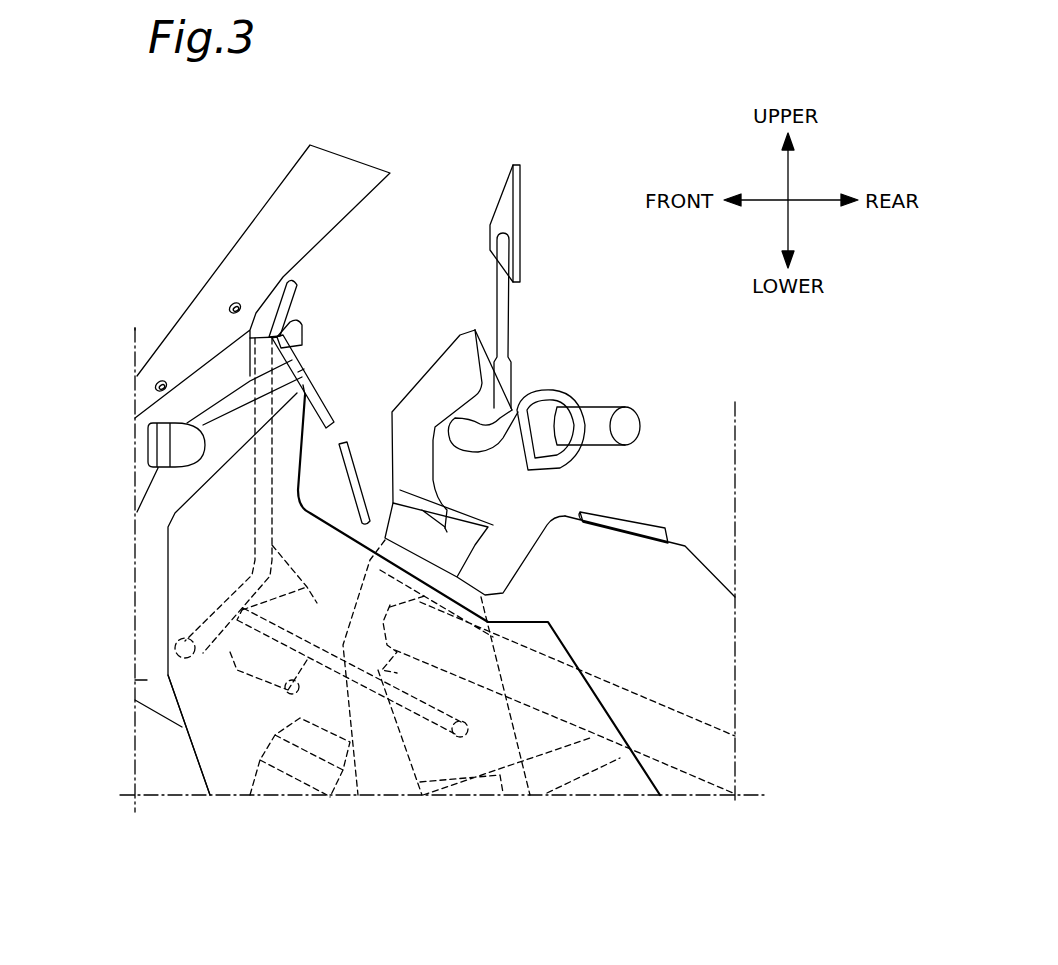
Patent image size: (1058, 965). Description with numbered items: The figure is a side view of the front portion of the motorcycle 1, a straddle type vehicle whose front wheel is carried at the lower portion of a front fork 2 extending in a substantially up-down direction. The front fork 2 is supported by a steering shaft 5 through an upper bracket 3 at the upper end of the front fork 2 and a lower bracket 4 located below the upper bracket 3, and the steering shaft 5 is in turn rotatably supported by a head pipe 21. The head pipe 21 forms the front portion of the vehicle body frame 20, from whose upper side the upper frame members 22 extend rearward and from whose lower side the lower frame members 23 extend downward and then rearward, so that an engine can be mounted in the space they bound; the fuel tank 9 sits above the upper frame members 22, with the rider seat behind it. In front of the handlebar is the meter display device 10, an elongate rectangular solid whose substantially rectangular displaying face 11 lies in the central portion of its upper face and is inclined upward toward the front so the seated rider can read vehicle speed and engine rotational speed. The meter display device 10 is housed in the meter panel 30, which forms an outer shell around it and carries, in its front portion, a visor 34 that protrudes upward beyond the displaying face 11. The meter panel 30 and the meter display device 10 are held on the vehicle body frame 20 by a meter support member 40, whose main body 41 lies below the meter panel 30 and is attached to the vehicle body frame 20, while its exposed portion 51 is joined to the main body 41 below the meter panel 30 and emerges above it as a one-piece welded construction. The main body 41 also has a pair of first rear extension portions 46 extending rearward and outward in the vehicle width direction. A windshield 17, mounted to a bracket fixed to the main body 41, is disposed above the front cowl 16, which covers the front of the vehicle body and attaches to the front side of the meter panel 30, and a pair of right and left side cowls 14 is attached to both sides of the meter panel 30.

The motorcycle 1 is at (112, 262).
The front fork 2 is at (252, 780).
The upper bracket 3 is at (457, 563).
The lower bracket 4 is at (303, 718).
The steering shaft 5 is at (443, 513).
The fuel tank 9 is at (710, 570).
The meter display device 10 is at (304, 378).
The displaying face 11 is at (306, 393).
The side cowls 14 is at (220, 783).
The front cowl 16 is at (135, 680).
The windshield 17 is at (249, 228).
The vehicle body frame 20 is at (668, 700).
The head pipe 21 is at (333, 715).
The upper frame members 22 is at (697, 732).
The lower frame members 23 is at (400, 783).
The meter panel 30 is at (315, 473).
The visor 34 is at (301, 323).
The meter support member 40 is at (257, 487).
The main body 41 is at (253, 532).
The first rear extension portions 46 is at (433, 705).
The exposed portion 51 is at (297, 287).